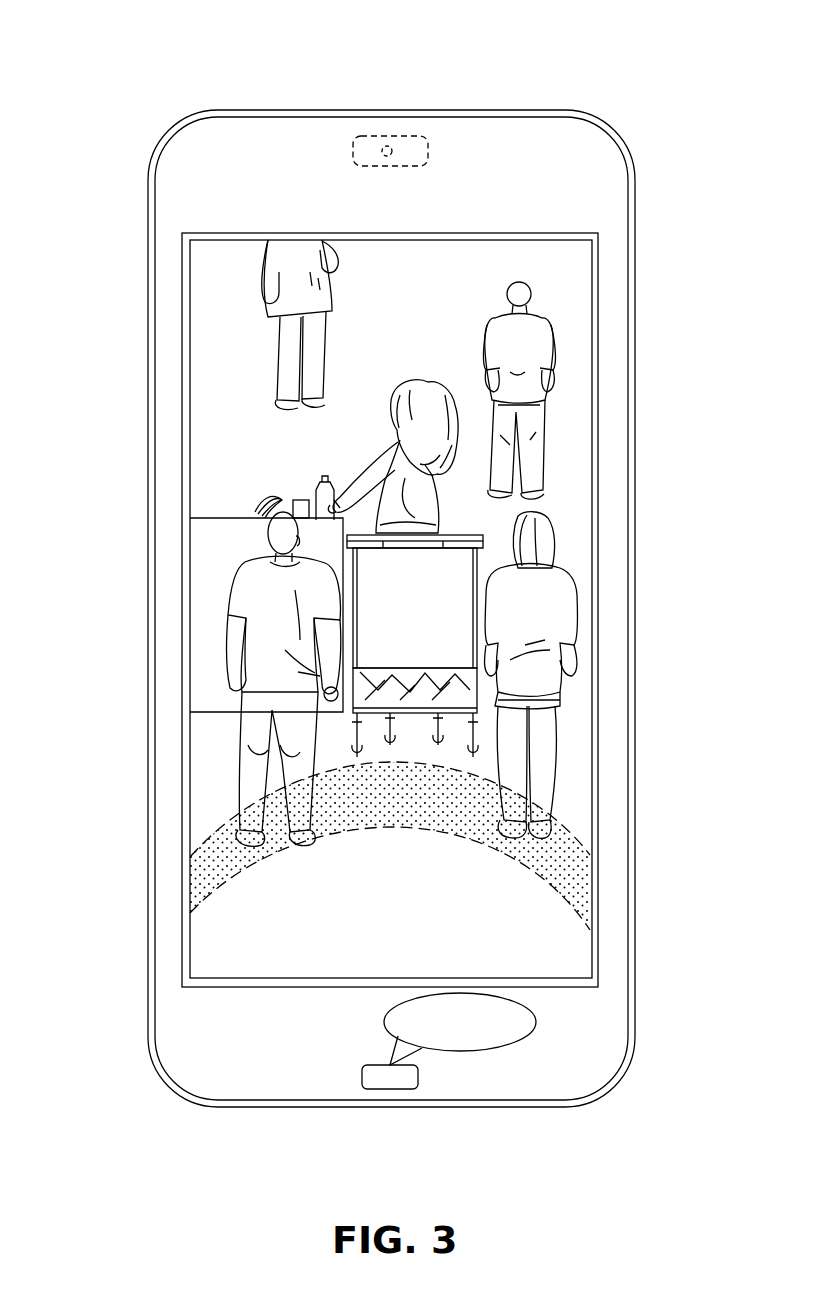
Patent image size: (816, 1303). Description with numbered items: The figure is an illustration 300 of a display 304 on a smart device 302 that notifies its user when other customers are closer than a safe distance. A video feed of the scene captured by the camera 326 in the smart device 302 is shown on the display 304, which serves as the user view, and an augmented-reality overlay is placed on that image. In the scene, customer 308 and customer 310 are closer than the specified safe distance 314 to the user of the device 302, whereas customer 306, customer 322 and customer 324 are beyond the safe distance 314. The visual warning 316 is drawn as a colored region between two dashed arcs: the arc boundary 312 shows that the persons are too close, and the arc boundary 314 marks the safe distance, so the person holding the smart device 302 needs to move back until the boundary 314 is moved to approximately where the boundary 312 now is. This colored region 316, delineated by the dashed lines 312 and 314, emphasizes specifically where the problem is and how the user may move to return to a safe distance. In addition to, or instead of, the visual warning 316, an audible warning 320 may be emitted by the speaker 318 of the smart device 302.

The illustration 300 is at (98, 63).
The smart device 302 is at (635, 190).
The display 304 is at (512, 233).
The customer 306 is at (435, 383).
The customer 308 is at (233, 572).
The customer 310 is at (580, 628).
The boundary 312 is at (192, 917).
The safe distance boundary 314 is at (190, 840).
The visual warning 316 is at (197, 883).
The speaker 318 is at (388, 1090).
The audible warning 320 is at (537, 1022).
The customer 322 is at (557, 348).
The customer 324 is at (263, 277).
The camera 326 is at (376, 130).